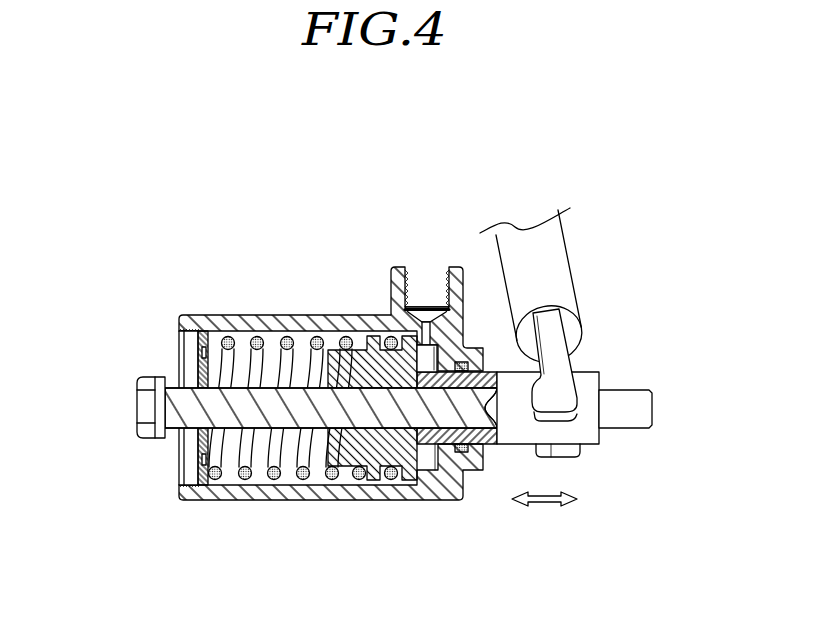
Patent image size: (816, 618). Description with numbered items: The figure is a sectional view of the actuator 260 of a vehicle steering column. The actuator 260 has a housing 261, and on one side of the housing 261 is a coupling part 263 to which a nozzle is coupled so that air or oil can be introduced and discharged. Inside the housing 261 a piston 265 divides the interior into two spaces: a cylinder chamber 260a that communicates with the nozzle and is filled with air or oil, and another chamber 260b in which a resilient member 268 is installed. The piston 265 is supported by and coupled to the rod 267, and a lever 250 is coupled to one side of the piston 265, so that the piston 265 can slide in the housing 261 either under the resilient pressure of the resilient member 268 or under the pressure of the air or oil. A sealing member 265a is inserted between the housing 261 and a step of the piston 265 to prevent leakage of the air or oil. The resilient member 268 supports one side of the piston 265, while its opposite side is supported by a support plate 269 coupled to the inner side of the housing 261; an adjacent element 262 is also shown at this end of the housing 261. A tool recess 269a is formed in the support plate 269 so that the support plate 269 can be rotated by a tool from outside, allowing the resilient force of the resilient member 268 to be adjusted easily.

The lever 250 is at (558, 268).
The actuator 260 is at (366, 386).
The cylinder chamber 260a is at (427, 466).
The spring chamber 260b is at (288, 472).
The housing 261 is at (330, 318).
The piston 262 is at (189, 315).
The coupling part 263 is at (425, 267).
The piston 265 is at (373, 447).
The sealing member 265a is at (392, 481).
The rod 267 is at (628, 422).
The resilient member 268 is at (248, 478).
The support plate 269 is at (198, 473).
The tool recess 269a is at (198, 460).